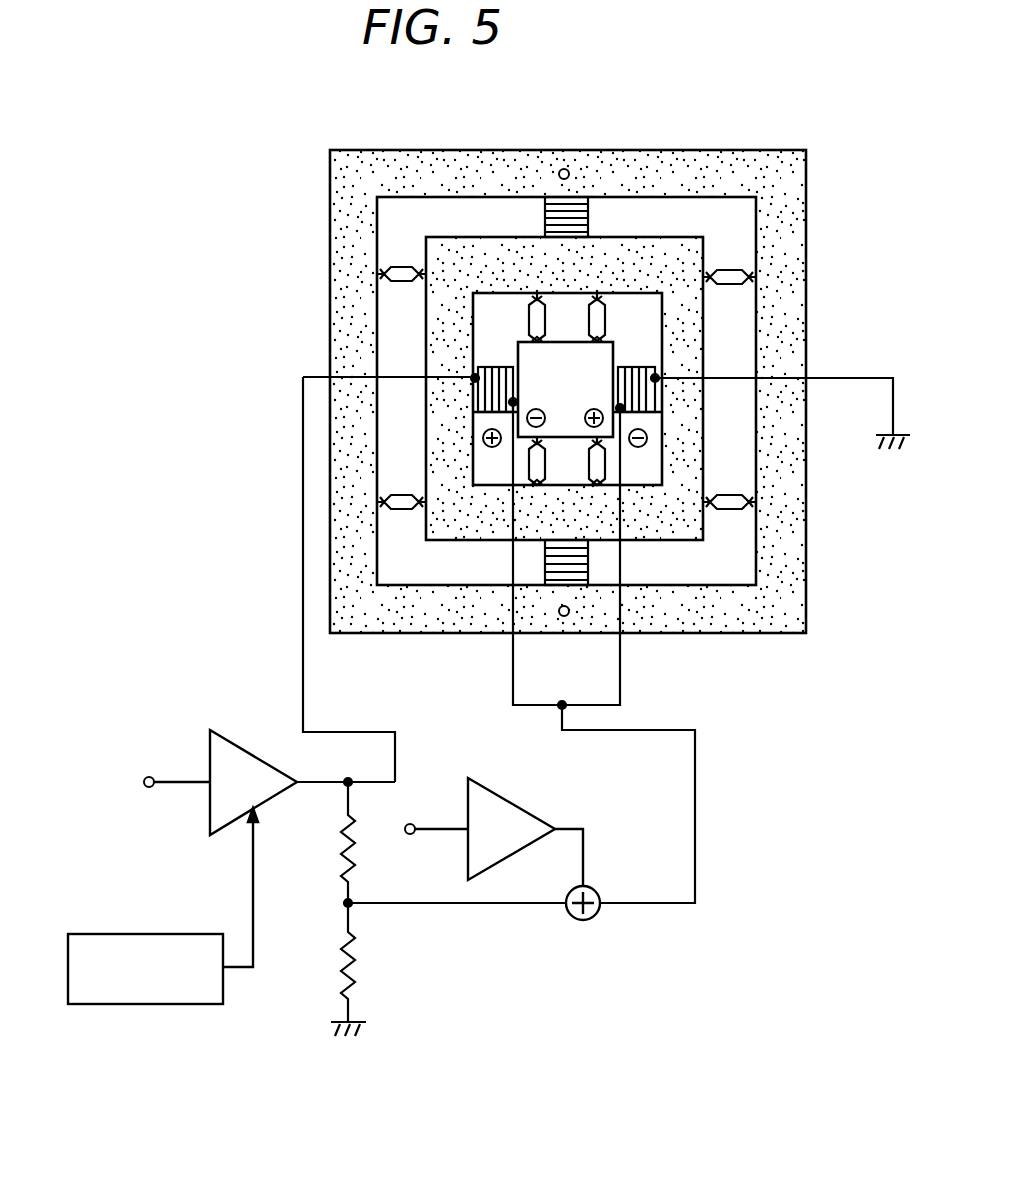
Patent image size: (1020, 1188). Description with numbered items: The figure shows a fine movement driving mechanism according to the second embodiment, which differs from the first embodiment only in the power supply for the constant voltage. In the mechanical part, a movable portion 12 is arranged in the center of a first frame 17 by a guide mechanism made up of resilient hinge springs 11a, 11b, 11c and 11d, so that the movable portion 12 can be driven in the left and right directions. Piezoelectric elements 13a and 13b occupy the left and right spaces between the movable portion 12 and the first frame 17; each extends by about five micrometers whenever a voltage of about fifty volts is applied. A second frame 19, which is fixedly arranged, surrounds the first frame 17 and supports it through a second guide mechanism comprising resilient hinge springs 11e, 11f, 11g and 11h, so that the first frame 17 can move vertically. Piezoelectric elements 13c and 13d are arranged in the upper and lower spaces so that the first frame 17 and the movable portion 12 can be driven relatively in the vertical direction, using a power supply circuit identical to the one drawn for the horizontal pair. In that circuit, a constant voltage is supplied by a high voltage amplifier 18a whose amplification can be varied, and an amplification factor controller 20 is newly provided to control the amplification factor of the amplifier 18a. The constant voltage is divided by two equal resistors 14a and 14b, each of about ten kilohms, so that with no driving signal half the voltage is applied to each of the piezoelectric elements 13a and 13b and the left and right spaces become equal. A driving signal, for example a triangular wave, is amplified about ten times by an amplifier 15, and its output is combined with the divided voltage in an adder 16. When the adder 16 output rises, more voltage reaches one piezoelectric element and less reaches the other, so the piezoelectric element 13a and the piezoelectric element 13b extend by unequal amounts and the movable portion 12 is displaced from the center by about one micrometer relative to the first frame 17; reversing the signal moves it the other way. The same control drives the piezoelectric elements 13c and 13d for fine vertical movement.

The resilient hinge spring 11a is at (528, 326).
The resilient hinge spring 11b is at (606, 326).
The resilient hinge spring 11c is at (605, 460).
The resilient hinge spring 11d is at (529, 460).
The resilient hinge spring 11e is at (729, 270).
The resilient hinge spring 11f is at (730, 509).
The resilient hinge spring 11g is at (402, 509).
The resilient hinge spring 11h is at (401, 268).
The movable portion 12 is at (559, 358).
The piezoelectric element 13a is at (476, 398).
The piezoelectric element 13b is at (657, 398).
The piezoelectric element 13c is at (588, 214).
The piezoelectric element 13d is at (588, 575).
The resistor 14a is at (344, 845).
The resistor 14b is at (345, 958).
The amplifier 15 is at (522, 810).
The adder 16 is at (598, 893).
The first frame 17 is at (479, 536).
The high voltage amplifier 18a is at (244, 746).
The second frame 19 is at (601, 166).
The amplification factor controller 20 is at (180, 933).